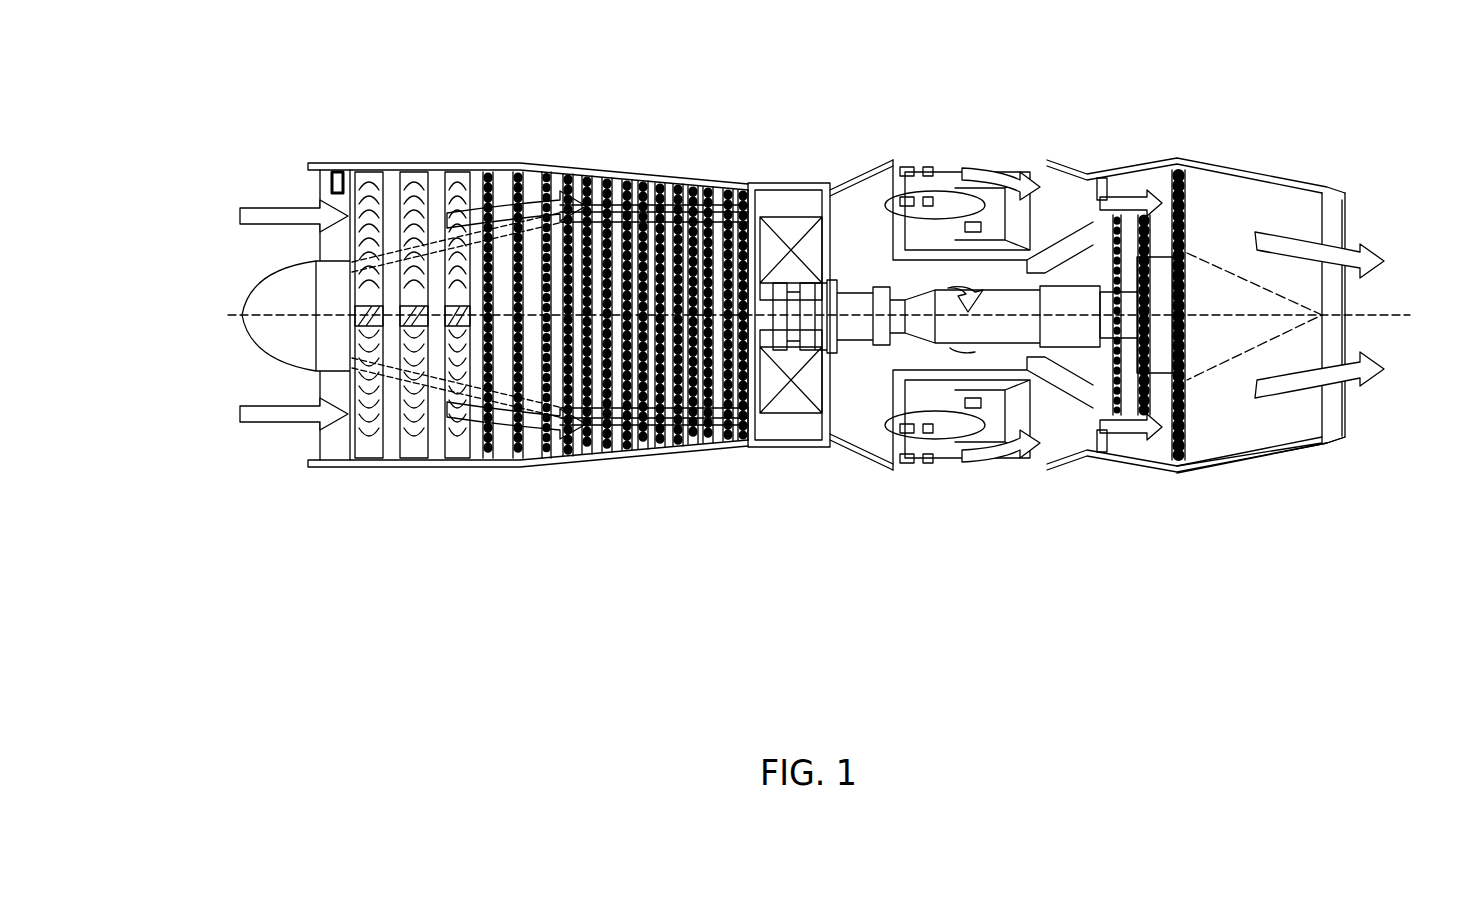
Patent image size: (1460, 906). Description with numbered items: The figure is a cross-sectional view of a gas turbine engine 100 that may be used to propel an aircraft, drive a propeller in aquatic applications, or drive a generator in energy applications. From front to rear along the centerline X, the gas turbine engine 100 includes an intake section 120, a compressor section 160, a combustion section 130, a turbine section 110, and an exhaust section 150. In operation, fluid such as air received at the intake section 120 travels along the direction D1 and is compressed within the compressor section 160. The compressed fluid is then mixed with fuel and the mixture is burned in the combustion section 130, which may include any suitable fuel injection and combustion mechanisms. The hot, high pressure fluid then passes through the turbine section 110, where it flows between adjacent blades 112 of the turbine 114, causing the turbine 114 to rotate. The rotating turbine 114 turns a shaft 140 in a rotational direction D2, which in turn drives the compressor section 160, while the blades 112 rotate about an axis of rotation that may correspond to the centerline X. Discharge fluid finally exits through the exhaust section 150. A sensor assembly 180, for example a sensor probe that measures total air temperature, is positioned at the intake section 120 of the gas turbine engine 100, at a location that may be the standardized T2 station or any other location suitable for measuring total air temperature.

The gas turbine engine 100 is at (769, 350).
The turbine section 110 is at (1224, 248).
The blades 112 is at (1180, 287).
The turbine 114 is at (1205, 335).
The intake section 120 is at (306, 246).
The combustion section 130 is at (1050, 182).
The shaft 140 is at (1010, 318).
The exhaust section 150 is at (1338, 228).
The compressor section 160 is at (600, 180).
The sensor assembly 180 is at (347, 167).
The direction D1 is at (253, 217).
The rotational direction D2 is at (953, 278).
The centerline X is at (834, 314).